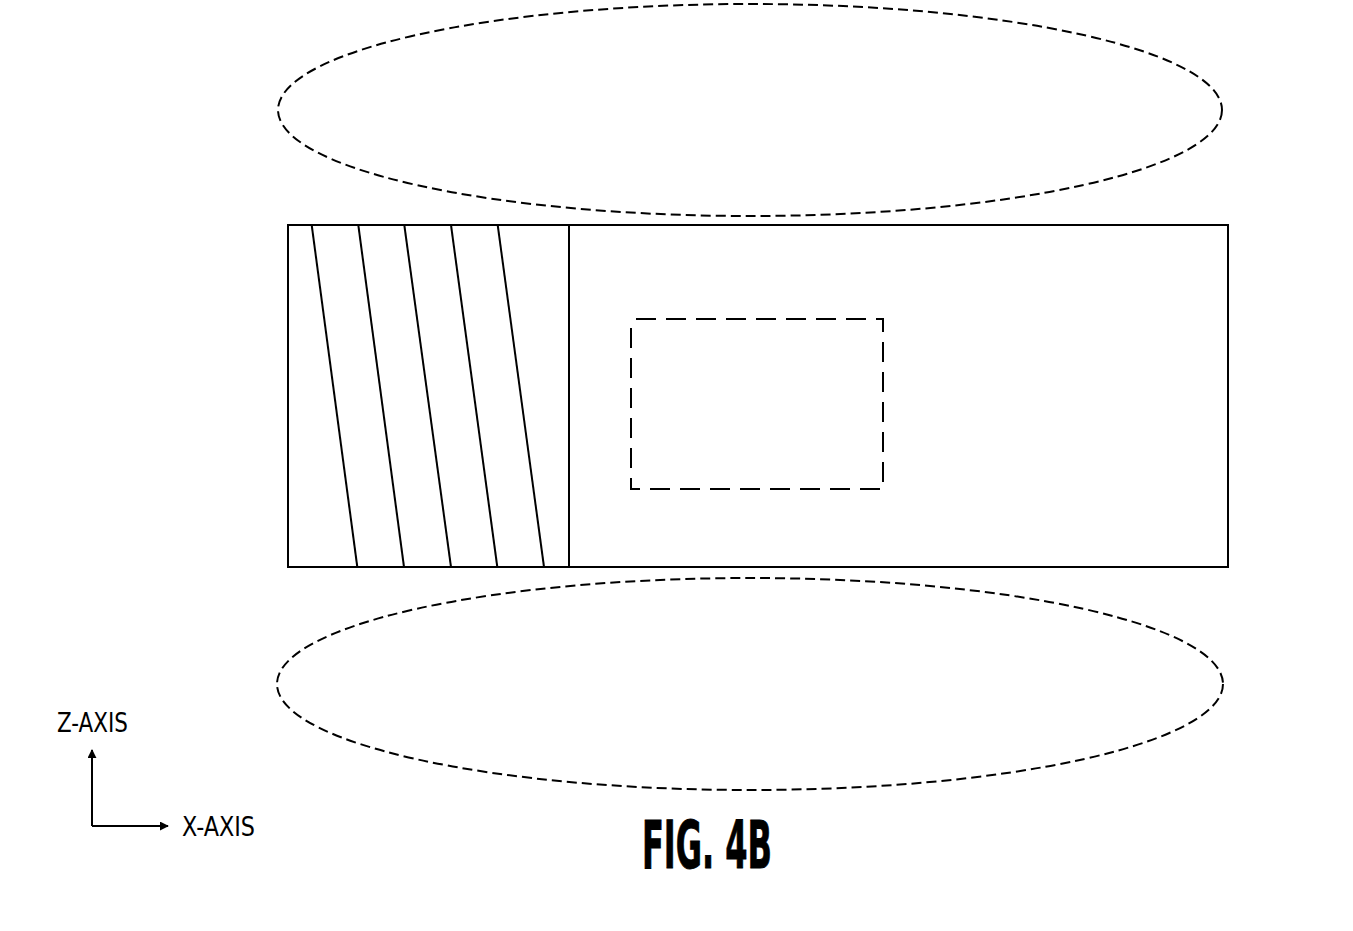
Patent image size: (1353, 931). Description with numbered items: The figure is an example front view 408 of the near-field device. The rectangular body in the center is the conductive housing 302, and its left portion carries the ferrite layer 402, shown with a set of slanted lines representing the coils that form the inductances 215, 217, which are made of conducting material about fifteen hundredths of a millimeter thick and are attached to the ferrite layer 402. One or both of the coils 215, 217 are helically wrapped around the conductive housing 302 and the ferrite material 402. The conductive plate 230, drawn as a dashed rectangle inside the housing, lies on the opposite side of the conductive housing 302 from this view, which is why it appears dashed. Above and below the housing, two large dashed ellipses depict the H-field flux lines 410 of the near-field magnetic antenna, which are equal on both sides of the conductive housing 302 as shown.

The front view 408 is at (145, 110).
The H-field flux lines 410 is at (1218, 97).
The conductive housing 302 is at (1228, 258).
The ferrite layer 402 is at (407, 396).
The inductance (L1) 215 is at (333, 398).
The inductance (L2) 217 is at (343, 396).
The conductive plate 230 is at (883, 380).